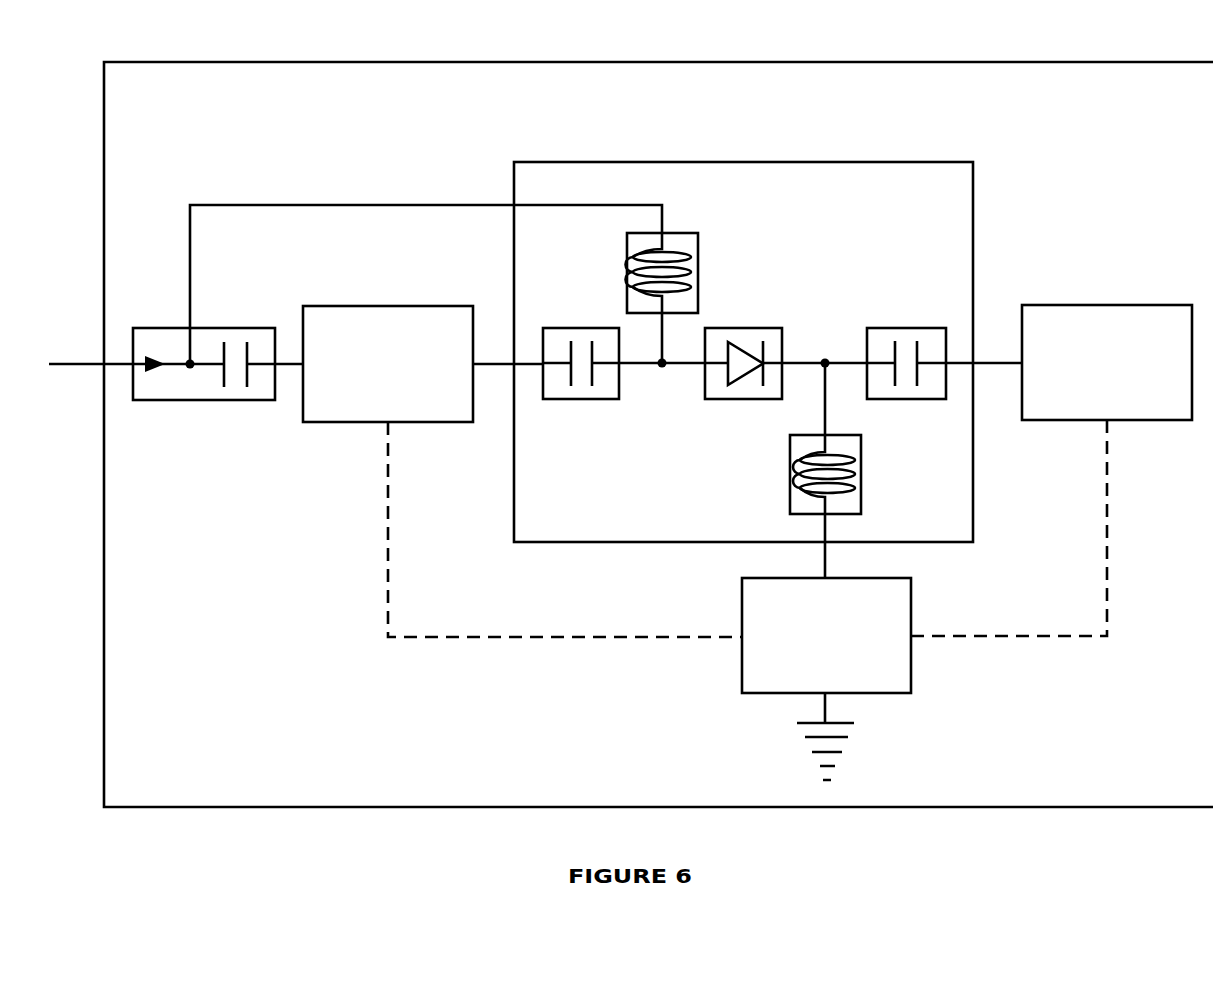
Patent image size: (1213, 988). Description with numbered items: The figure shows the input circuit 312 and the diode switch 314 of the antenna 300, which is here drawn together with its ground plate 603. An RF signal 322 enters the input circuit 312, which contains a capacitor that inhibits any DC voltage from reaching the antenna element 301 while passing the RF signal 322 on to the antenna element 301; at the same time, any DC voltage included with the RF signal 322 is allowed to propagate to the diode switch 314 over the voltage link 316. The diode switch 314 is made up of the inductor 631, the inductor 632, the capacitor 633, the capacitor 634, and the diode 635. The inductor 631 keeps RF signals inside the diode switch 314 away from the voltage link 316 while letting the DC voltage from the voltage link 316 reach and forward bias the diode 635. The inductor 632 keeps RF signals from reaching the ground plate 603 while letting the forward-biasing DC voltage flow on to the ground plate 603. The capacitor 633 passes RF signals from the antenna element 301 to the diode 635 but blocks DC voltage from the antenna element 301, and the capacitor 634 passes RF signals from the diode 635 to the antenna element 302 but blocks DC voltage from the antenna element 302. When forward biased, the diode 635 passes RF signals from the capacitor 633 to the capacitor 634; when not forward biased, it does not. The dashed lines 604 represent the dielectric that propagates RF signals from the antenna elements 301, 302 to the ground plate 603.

The antenna 300 is at (658, 434).
The RF signal 322 is at (80, 364).
The input circuit 312 is at (177, 328).
The voltage link 316 is at (220, 205).
The antenna element 301 is at (423, 364).
The diode switch 314 is at (743, 352).
The inductor 631 is at (693, 233).
The inductor 632 is at (790, 462).
The capacitor 633 is at (607, 400).
The capacitor 634 is at (880, 328).
The diode 635 is at (720, 400).
The antenna element 302 is at (1107, 362).
The ground plate 603 is at (826, 679).
The dashed lines 604 is at (425, 640).